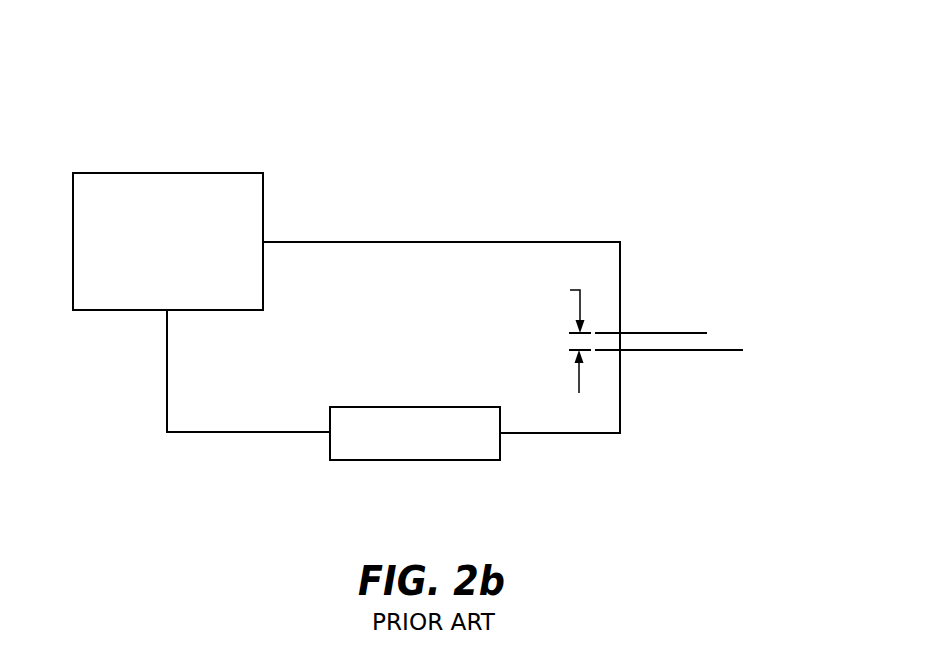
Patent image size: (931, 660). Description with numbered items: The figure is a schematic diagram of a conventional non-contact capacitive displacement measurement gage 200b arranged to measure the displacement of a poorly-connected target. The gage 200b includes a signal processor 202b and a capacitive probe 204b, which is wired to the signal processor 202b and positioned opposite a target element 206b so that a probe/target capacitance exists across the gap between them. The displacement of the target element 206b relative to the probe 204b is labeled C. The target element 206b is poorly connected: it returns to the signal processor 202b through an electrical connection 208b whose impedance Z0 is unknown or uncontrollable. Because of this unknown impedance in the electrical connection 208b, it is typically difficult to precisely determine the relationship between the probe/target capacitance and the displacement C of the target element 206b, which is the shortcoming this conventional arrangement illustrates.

The non-contact capacitive displacement measurement gage 200b is at (66, 90).
The signal processor 202b is at (195, 254).
The capacitive probe 204b is at (676, 322).
The target element 206b is at (676, 363).
The electrical connection 208b is at (436, 473).